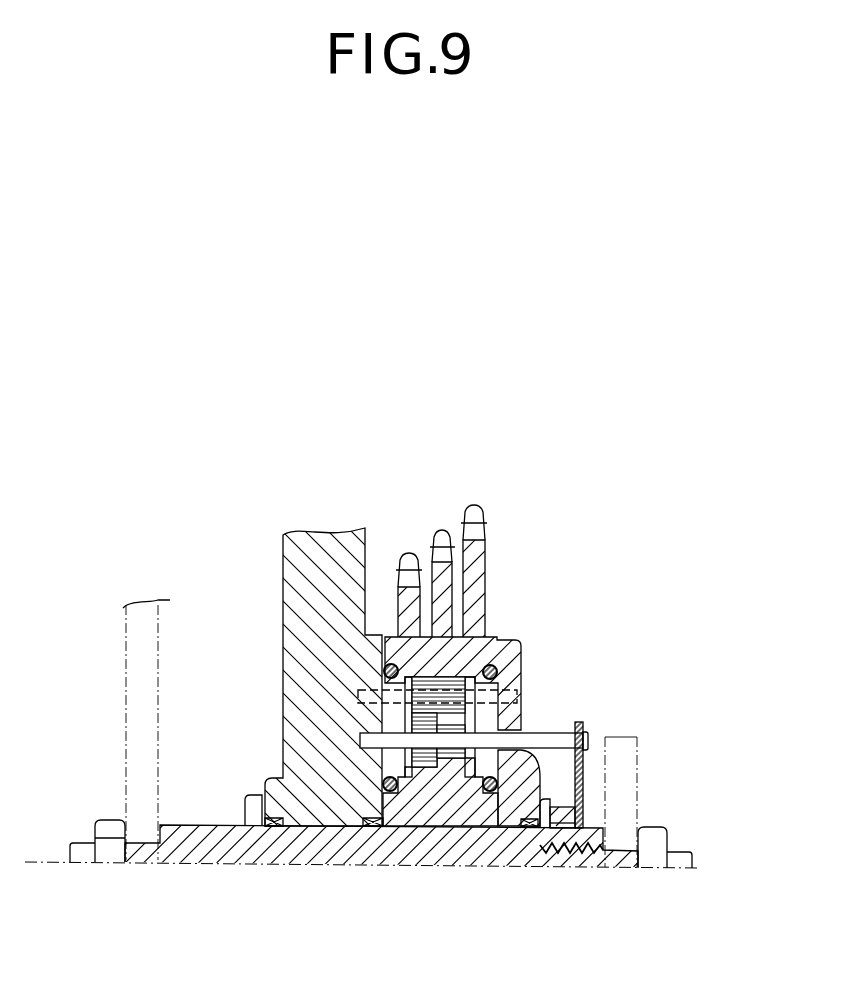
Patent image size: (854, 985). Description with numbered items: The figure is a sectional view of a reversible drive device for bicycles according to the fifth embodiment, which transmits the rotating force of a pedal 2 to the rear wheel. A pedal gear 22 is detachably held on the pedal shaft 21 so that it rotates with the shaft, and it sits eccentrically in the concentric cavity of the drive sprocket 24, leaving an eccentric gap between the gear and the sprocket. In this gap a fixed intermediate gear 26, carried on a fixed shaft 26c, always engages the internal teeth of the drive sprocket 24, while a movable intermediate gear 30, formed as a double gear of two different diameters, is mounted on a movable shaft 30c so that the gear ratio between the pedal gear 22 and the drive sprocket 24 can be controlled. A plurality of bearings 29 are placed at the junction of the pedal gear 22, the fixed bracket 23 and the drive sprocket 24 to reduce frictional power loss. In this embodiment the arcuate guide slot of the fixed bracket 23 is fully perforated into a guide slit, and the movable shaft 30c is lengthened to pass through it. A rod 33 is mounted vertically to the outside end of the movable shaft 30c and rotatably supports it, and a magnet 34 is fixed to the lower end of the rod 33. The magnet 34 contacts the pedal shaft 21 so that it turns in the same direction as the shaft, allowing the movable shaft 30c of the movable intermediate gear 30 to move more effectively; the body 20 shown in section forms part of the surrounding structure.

The pedal 2 is at (126, 705).
The block 20 is at (282, 570).
The pedal shaft 21 is at (208, 843).
The pedal gear 22 is at (382, 785).
The fixed bracket 23 is at (504, 640).
The drive sprocket 24 is at (398, 572).
The fixed intermediate gear 26 is at (498, 677).
The fixed shaft 26c is at (500, 713).
The bearings 29 is at (384, 672).
The movable intermediate gear 30 is at (520, 738).
The movable shaft 30c is at (588, 745).
The rod 33 is at (583, 793).
The magnet 34 is at (565, 852).